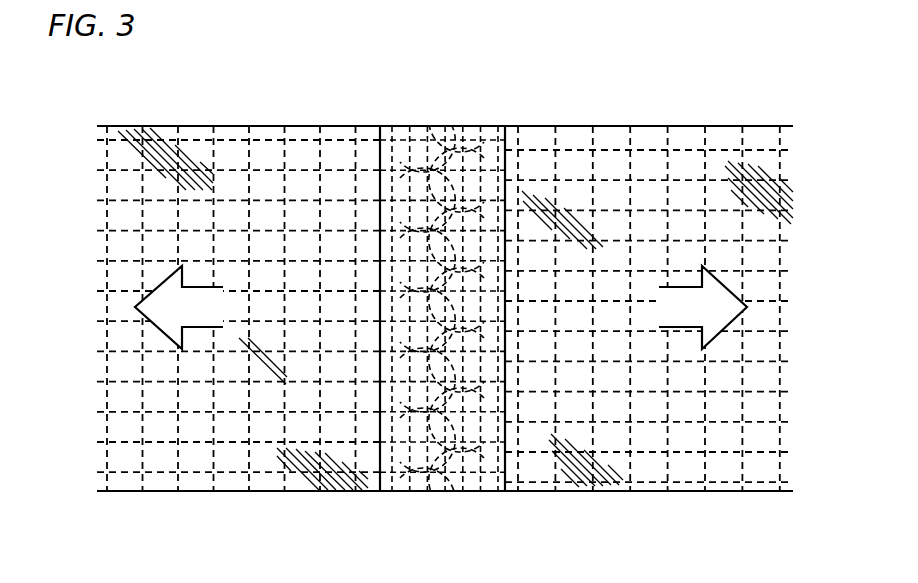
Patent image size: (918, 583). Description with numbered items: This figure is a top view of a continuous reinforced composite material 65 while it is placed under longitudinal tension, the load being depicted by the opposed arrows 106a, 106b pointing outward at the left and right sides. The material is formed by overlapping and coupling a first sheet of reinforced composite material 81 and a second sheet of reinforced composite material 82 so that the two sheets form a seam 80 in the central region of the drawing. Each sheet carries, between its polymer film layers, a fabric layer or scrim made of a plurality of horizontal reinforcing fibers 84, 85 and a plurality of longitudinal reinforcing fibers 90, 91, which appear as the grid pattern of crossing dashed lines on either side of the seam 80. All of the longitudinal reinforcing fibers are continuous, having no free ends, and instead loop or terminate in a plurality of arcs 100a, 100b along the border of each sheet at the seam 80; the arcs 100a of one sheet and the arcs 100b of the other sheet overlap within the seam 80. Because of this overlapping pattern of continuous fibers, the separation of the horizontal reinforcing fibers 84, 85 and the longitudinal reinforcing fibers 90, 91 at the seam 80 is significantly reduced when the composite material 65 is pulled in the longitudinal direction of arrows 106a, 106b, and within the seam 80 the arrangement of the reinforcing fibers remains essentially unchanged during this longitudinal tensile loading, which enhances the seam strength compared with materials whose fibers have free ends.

The continuous reinforced composite material 65 is at (446, 100).
The seam 80 is at (453, 491).
The first sheet of reinforced composite material 81 is at (683, 125).
The second sheet of reinforced composite material 82 is at (232, 125).
The horizontal reinforcing fiber 84 is at (740, 444).
The horizontal reinforcing fiber 85 is at (140, 246).
The longitudinal reinforcing fiber 90 is at (135, 171).
The longitudinal reinforcing fiber 91 is at (760, 390).
The arcs 100a is at (400, 457).
The arcs 100b is at (470, 460).
The arrow 106a is at (150, 325).
The arrow 106b is at (735, 298).